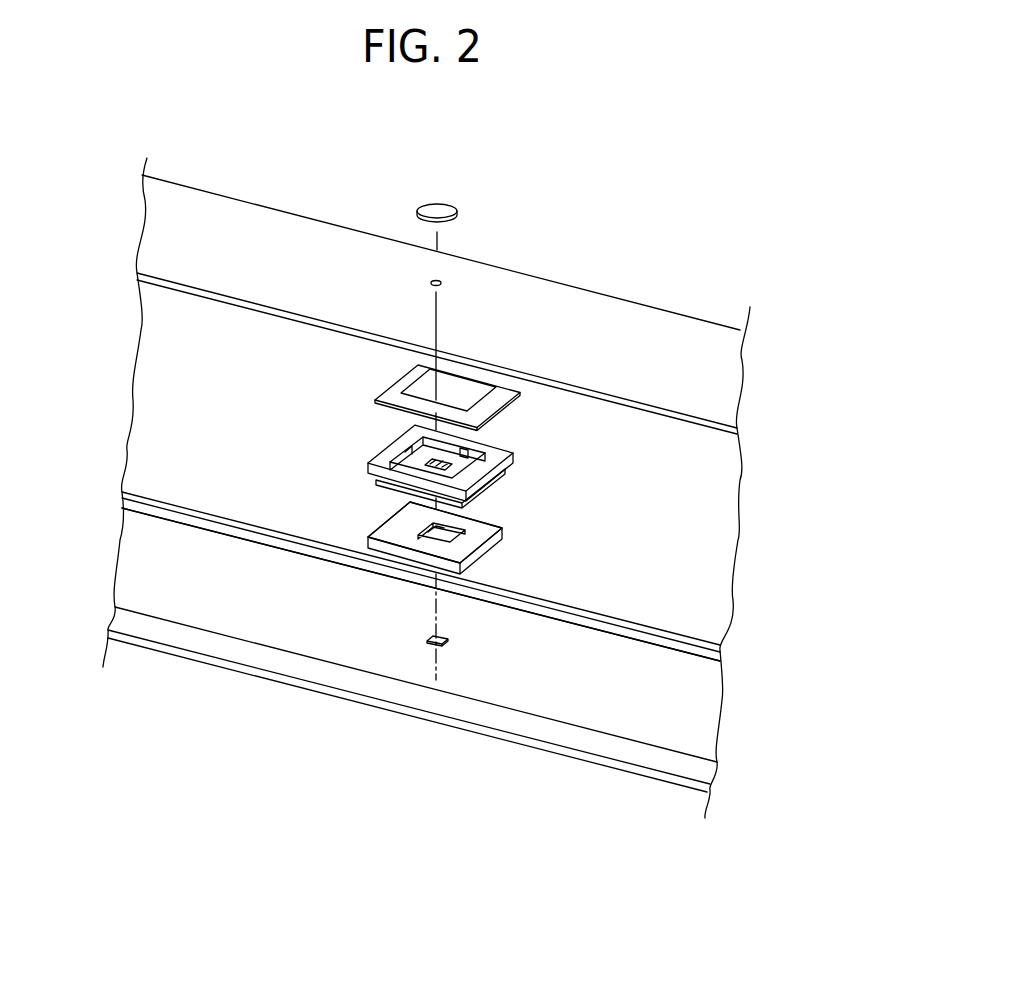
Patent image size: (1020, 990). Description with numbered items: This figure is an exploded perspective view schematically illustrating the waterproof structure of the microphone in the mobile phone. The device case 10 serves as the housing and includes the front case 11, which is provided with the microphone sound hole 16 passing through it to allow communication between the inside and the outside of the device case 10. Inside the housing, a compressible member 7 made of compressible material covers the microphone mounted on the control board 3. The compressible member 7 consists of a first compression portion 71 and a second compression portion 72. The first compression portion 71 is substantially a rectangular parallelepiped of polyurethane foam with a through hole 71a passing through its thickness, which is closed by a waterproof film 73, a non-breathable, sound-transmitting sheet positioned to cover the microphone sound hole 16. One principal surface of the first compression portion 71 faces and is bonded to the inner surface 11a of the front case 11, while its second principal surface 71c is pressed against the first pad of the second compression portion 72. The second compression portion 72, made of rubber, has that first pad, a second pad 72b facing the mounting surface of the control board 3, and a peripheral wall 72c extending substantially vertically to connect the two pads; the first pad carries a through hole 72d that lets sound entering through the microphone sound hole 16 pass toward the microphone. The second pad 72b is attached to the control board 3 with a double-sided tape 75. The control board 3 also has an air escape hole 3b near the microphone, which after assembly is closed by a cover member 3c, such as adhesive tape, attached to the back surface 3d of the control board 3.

The control board 3 is at (426, 488).
The air escape hole 3b is at (434, 280).
The cover member 3c is at (441, 207).
The back surface 3d is at (562, 308).
The compressible member 7 is at (646, 439).
The device case 10 is at (414, 639).
The front case 11 is at (620, 706).
The inner surface 11a is at (190, 553).
The microphone sound hole 16 is at (430, 643).
The first compression portion 71 is at (469, 534).
The through hole 71a is at (436, 528).
The second principal surface 71c is at (405, 535).
The second compression portion 72 is at (472, 463).
The second pad 72b is at (400, 454).
The peripheral wall 72c is at (470, 458).
The through hole 72d is at (480, 473).
The waterproof film 73 is at (423, 528).
The double-sided tape 75 is at (405, 384).